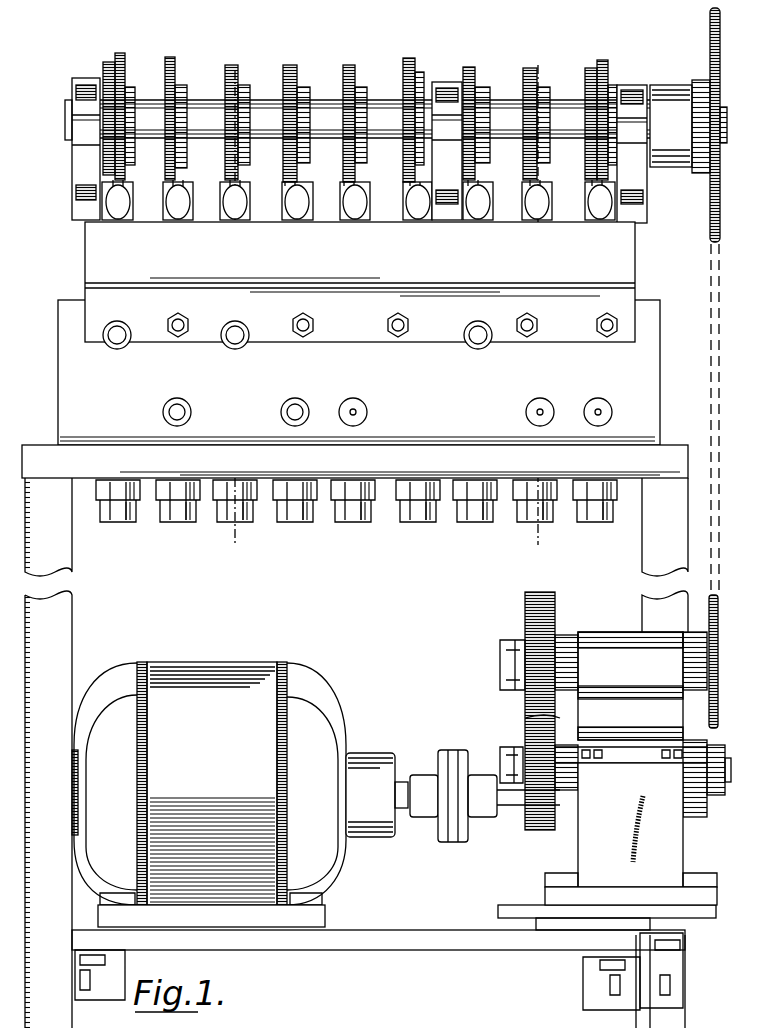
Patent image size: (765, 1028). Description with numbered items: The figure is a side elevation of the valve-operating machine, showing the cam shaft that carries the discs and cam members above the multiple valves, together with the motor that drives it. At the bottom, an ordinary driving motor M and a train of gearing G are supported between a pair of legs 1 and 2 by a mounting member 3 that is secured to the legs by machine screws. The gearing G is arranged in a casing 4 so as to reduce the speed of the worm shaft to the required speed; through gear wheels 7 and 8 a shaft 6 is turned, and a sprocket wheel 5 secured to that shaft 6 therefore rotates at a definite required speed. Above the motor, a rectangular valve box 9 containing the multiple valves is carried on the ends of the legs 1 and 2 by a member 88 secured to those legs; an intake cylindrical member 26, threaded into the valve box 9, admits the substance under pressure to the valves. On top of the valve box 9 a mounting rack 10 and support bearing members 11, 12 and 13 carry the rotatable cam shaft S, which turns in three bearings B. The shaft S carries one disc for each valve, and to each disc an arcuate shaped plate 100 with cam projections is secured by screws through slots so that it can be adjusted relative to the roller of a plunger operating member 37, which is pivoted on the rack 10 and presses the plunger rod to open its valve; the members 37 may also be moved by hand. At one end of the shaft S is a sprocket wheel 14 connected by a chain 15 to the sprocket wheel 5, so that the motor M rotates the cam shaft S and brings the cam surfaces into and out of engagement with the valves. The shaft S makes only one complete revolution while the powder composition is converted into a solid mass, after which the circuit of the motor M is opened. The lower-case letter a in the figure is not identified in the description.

The leg 1 is at (72, 668).
The leg 2 is at (672, 552).
The mounting member 3 is at (385, 935).
The casing 4 is at (612, 636).
The sprocket wheel 5 is at (714, 600).
The shaft 6 is at (503, 660).
The gear wheel 7 is at (528, 612).
The gear wheel 8 is at (530, 762).
The valve box 9 is at (654, 378).
The mounting rack 10 is at (635, 278).
The support bearing member 11 is at (82, 78).
The support bearing member 12 is at (444, 86).
The support bearing member 13 is at (628, 90).
The sprocket wheel 14 is at (721, 30).
The chain 15 is at (722, 372).
The intake cylindrical member 26 is at (225, 345).
The plunger operating member 37 is at (178, 212).
The member 88 is at (668, 452).
The arcuate shaped plate 100 is at (125, 60).
The gear a is at (228, 70).
The bearing B is at (82, 127).
The train of gearing G is at (550, 718).
The driving motor M is at (212, 688).
The cam shaft S is at (727, 125).